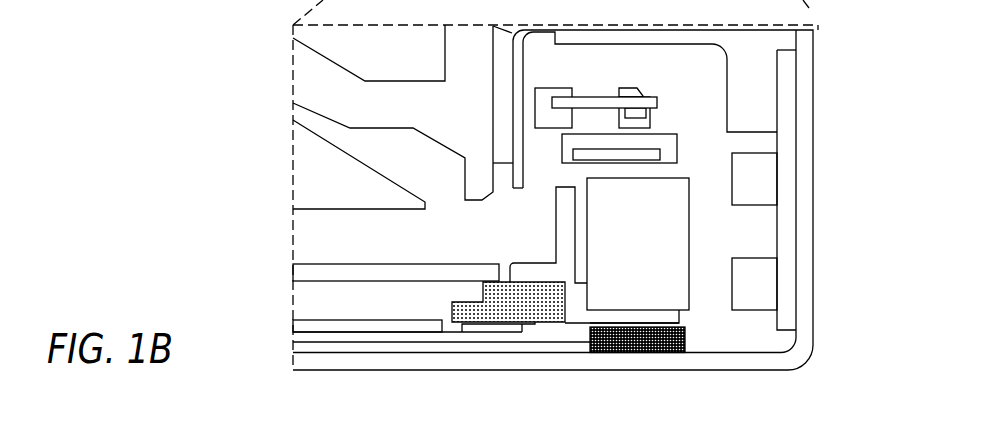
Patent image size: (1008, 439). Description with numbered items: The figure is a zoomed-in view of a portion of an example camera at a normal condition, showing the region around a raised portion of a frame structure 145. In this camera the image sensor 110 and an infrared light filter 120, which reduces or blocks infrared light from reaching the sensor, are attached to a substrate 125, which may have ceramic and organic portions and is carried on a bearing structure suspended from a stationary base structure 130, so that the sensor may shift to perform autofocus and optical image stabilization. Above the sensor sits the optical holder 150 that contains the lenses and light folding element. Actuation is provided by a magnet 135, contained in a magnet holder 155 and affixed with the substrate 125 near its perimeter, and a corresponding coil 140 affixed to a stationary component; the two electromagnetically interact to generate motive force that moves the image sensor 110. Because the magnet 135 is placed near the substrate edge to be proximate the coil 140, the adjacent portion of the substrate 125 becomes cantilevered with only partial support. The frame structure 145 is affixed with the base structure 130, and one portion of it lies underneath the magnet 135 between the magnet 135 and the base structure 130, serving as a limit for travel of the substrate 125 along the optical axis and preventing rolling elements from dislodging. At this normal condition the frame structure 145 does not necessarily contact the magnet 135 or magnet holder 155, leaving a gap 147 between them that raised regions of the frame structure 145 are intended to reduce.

The image sensor 110 is at (320, 325).
The infrared light filter 120 is at (355, 270).
The substrate 125 is at (543, 315).
The base structure 130 is at (773, 368).
The magnet 135 is at (651, 268).
The coil 140 is at (758, 188).
The frame structure 145 is at (656, 352).
The gap 147 is at (687, 325).
The optical holder 150 is at (437, 337).
The magnet holder 155 is at (556, 219).